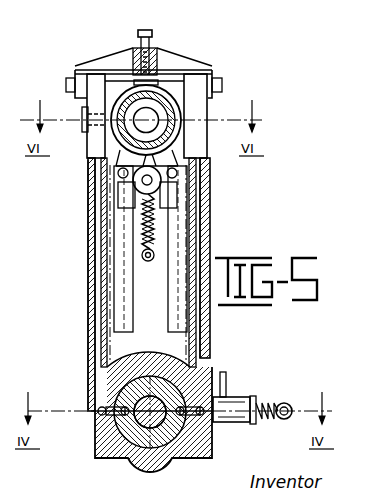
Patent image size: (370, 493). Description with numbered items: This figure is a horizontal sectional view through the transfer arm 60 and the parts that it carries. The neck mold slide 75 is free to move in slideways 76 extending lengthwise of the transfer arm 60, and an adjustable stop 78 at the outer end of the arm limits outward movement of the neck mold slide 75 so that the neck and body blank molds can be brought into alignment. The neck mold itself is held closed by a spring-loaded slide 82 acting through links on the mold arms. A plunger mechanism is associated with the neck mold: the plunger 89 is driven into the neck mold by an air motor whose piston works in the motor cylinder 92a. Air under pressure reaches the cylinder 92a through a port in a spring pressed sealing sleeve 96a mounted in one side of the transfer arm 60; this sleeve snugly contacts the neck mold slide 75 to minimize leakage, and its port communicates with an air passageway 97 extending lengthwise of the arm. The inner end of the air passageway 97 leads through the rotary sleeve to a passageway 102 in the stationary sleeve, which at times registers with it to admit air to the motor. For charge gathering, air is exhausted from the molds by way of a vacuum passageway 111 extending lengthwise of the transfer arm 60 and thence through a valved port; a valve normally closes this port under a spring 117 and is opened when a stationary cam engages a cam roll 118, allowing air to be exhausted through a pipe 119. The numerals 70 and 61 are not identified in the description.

The adjustable stop 78 is at (154, 60).
The motor cylinder 92a is at (176, 104).
The spring pressed sealing sleeve 96a is at (87, 131).
The air passageway 97 is at (93, 224).
The vacuum passageway 111 is at (203, 188).
The transfer arm 60 is at (207, 223).
The slide 82 is at (167, 260).
The neck mold slide 75 is at (150, 249).
The slideways 76 is at (166, 328).
The base block 70 is at (134, 456).
The plunger 89 is at (99, 408).
The passageway 102 is at (98, 414).
The sleeve 61 is at (97, 437).
The pipe 119 is at (227, 392).
The spring 117 is at (258, 400).
The cam roll 118 is at (285, 403).